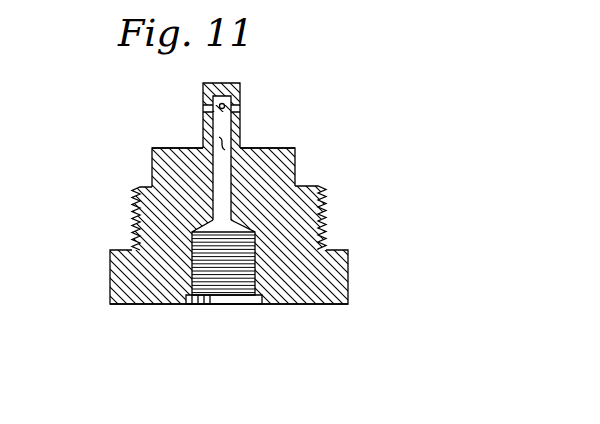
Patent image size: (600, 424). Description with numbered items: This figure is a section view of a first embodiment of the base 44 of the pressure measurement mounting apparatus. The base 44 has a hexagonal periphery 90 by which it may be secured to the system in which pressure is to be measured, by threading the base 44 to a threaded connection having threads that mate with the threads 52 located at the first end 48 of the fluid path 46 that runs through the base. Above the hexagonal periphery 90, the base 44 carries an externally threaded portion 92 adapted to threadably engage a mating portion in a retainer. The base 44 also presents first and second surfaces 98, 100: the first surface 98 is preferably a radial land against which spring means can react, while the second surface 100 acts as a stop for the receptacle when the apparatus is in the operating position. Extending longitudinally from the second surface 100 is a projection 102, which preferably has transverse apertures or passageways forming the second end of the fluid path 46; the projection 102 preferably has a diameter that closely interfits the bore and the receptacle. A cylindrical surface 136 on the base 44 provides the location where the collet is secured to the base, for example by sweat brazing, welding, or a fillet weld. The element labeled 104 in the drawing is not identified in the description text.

The base 44 is at (160, 305).
The fluid path 46 is at (241, 130).
The first end 48 is at (240, 305).
The threads 52 is at (200, 305).
The hexagonal periphery 90 is at (110, 292).
The externally threaded portion 92 is at (131, 222).
The first surface 98 is at (150, 188).
The second surface 100 is at (178, 147).
The longitudinal projection 102 is at (238, 83).
The ring 104 is at (240, 107).
The cylindrical surface 136 is at (300, 175).